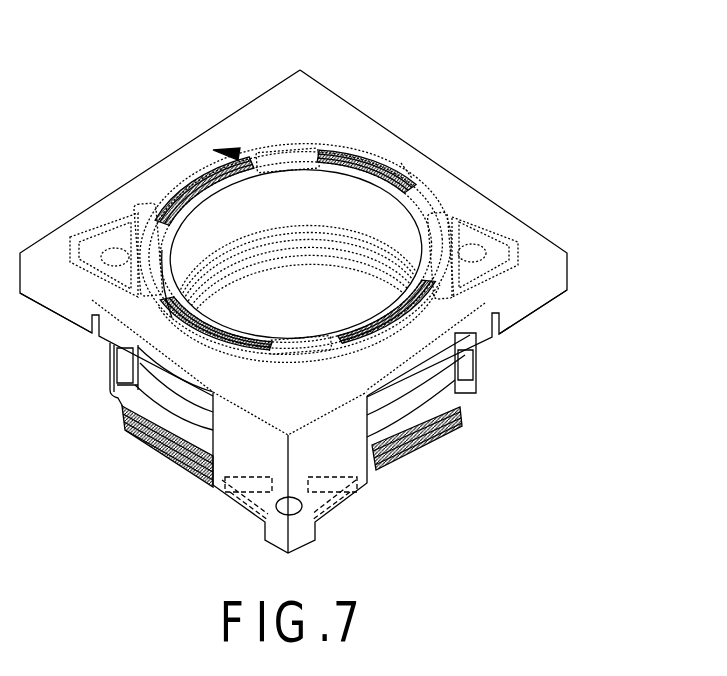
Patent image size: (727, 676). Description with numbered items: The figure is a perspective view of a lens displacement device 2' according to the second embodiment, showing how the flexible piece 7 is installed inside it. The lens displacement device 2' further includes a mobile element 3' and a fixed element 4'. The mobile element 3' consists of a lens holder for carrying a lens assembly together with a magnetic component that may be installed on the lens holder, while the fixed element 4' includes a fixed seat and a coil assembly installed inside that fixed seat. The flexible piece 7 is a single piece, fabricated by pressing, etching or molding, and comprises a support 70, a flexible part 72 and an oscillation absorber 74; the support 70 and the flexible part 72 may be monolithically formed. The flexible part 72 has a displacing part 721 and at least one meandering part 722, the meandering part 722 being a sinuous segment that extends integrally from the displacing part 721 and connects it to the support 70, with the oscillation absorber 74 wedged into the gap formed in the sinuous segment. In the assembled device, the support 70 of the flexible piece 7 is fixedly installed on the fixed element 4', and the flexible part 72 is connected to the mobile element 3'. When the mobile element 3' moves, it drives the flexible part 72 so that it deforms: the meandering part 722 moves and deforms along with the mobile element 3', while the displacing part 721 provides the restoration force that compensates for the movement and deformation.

The flexible piece 7 is at (218, 152).
The oscillation absorber 74 is at (238, 146).
The support 70 is at (494, 243).
The flexible part 72 is at (514, 100).
The displacing part 721 is at (312, 158).
The meandering part 722 is at (401, 163).
The lens displacement device 2' is at (376, 318).
The mobile element 3' is at (346, 290).
The fixed element 4' is at (343, 288).